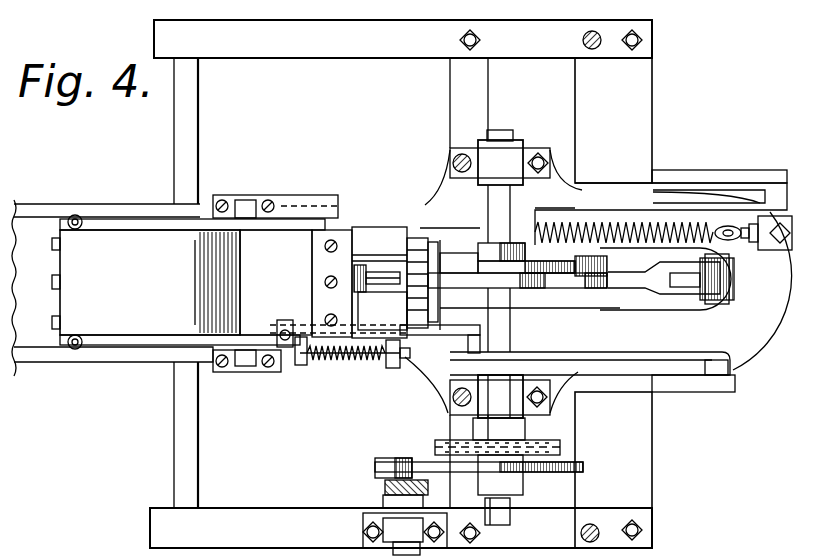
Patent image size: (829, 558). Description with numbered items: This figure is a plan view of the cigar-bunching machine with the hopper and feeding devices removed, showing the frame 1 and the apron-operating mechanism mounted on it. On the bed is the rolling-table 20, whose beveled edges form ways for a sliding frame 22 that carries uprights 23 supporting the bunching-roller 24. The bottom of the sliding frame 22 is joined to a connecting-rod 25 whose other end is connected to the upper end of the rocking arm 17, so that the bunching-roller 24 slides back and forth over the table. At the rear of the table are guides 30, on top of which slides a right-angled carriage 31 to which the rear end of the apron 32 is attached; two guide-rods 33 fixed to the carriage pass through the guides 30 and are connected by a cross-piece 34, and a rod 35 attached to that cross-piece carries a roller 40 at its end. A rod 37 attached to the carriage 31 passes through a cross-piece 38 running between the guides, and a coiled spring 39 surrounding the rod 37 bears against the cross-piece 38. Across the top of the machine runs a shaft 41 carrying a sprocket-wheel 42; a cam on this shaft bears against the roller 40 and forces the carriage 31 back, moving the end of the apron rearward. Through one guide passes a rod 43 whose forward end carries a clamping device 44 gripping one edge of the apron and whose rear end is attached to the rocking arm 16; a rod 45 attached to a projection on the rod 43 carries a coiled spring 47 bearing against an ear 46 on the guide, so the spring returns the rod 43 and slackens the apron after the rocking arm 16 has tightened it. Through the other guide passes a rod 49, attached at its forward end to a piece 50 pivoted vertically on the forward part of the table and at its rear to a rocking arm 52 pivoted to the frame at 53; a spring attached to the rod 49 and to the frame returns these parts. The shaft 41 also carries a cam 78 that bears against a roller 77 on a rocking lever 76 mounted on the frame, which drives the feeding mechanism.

The frame 1 is at (302, 60).
The rocking arm 16 is at (700, 378).
The rocking arm 17 is at (735, 282).
The table 20 is at (120, 347).
The sliding frame 22 is at (292, 196).
The uprights 23 is at (240, 200).
The bunching-roller 24 is at (232, 365).
The connecting-rod 25 is at (620, 286).
The guides 30 is at (395, 238).
The carriage 31 is at (345, 232).
The apron 32 is at (150, 232).
The guide-rods 33 is at (433, 243).
The cross-piece 34 is at (418, 250).
The rod 35 is at (490, 284).
The rod 37 is at (388, 272).
The cross-piece 38 is at (360, 265).
The coiled spring 39 is at (362, 292).
The roller 40 is at (607, 268).
The shaft 41 is at (510, 340).
The sprocket-wheel 42 is at (560, 280).
The rod 43 is at (425, 335).
The clamping device 44 is at (285, 350).
The rod 45 is at (352, 360).
The ear 46 is at (392, 368).
The coiled spring 47 is at (378, 362).
The rod 49 is at (522, 232).
The piece 50 is at (60, 275).
The rocking arm 52 is at (720, 184).
The pivot 53 is at (600, 222).
The rocking lever 76 is at (385, 490).
The roller 77 is at (375, 470).
The cam 78 is at (536, 472).